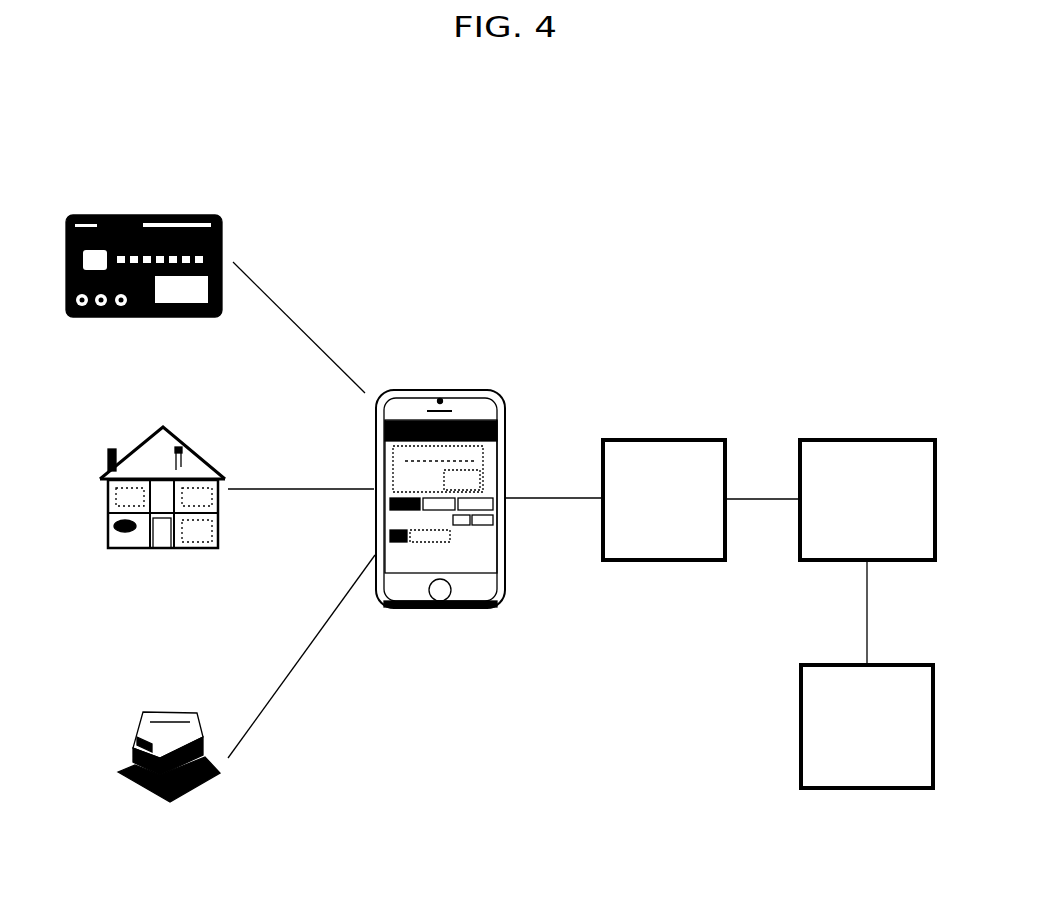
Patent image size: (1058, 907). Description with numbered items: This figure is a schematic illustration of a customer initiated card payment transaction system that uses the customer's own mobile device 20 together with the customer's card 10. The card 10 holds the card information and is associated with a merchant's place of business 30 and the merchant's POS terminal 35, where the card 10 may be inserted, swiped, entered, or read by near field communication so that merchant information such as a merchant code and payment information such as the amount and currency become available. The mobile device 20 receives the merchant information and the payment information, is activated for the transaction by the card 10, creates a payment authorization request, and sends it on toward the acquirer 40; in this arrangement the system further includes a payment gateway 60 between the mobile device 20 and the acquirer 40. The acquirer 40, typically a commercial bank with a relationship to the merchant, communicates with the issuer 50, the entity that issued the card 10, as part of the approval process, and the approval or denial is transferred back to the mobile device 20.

The card 10 is at (143, 213).
The mobile device 20 is at (440, 562).
The merchant's place of business 30 is at (121, 466).
The POS terminal 35 is at (124, 730).
The acquirer 40 is at (867, 500).
The issuer 50 is at (867, 726).
The payment gateway 60 is at (664, 500).